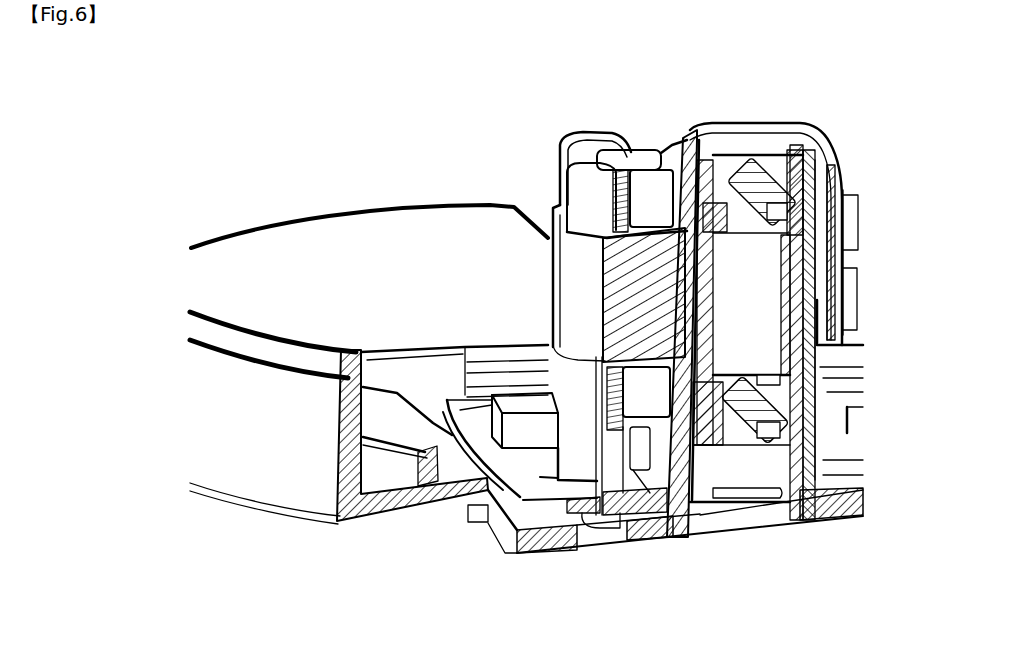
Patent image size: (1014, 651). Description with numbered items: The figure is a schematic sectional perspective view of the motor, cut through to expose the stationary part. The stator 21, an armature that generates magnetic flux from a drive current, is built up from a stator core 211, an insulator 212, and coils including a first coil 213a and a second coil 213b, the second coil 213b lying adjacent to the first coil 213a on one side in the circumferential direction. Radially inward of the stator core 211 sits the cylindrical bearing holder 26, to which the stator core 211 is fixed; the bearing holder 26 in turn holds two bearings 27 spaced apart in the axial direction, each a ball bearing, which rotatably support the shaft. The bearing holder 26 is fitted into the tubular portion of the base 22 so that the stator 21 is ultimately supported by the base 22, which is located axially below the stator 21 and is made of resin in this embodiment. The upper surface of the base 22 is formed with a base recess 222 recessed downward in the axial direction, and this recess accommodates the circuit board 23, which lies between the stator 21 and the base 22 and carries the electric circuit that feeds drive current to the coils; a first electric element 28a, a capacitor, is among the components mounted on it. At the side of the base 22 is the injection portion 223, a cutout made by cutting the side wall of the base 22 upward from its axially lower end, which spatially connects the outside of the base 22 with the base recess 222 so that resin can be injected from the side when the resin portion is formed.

The stator 21 is at (556, 158).
The base 22 is at (273, 477).
The circuit board 23 is at (536, 466).
The bearing holder 26 is at (797, 300).
The bearing 27 is at (767, 190).
The first electric element 28a is at (586, 463).
The stator core 211 is at (635, 285).
The insulator 212 is at (688, 465).
The first coil 213a is at (643, 210).
The second coil 213b is at (636, 148).
The base recess 222 is at (840, 483).
The injection portion 223 is at (488, 523).